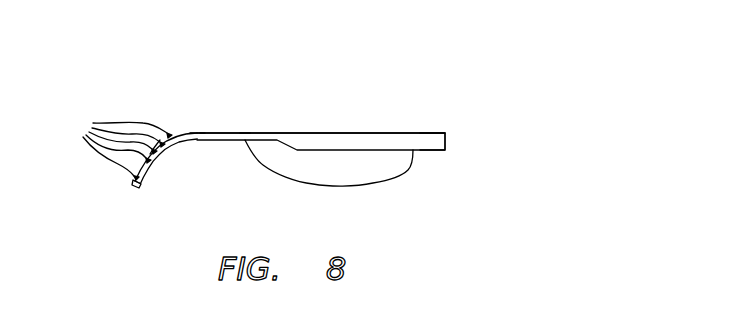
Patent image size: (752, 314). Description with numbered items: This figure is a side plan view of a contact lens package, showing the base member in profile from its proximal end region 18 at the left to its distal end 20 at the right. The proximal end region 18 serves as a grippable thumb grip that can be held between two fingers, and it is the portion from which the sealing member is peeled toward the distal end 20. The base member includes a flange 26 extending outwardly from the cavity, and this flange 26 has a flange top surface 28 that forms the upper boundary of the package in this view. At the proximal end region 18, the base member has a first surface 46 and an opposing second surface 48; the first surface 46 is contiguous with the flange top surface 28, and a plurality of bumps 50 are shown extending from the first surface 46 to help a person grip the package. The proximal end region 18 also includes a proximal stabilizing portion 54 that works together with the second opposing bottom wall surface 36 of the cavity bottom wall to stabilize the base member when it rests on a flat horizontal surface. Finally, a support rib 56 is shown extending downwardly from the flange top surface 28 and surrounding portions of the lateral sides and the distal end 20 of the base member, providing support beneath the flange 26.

The proximal end region 18 is at (165, 110).
The distal end 20 is at (383, 93).
The flange 26 is at (245, 133).
The flange top surface 28 is at (245, 133).
The second opposing bottom wall surface 36 is at (343, 187).
The first surface 46 is at (197, 134).
The second surface 48 is at (155, 152).
The bumps 50 is at (118, 145).
The proximal stabilizing portion 54 is at (137, 180).
The support rib 56 is at (425, 142).